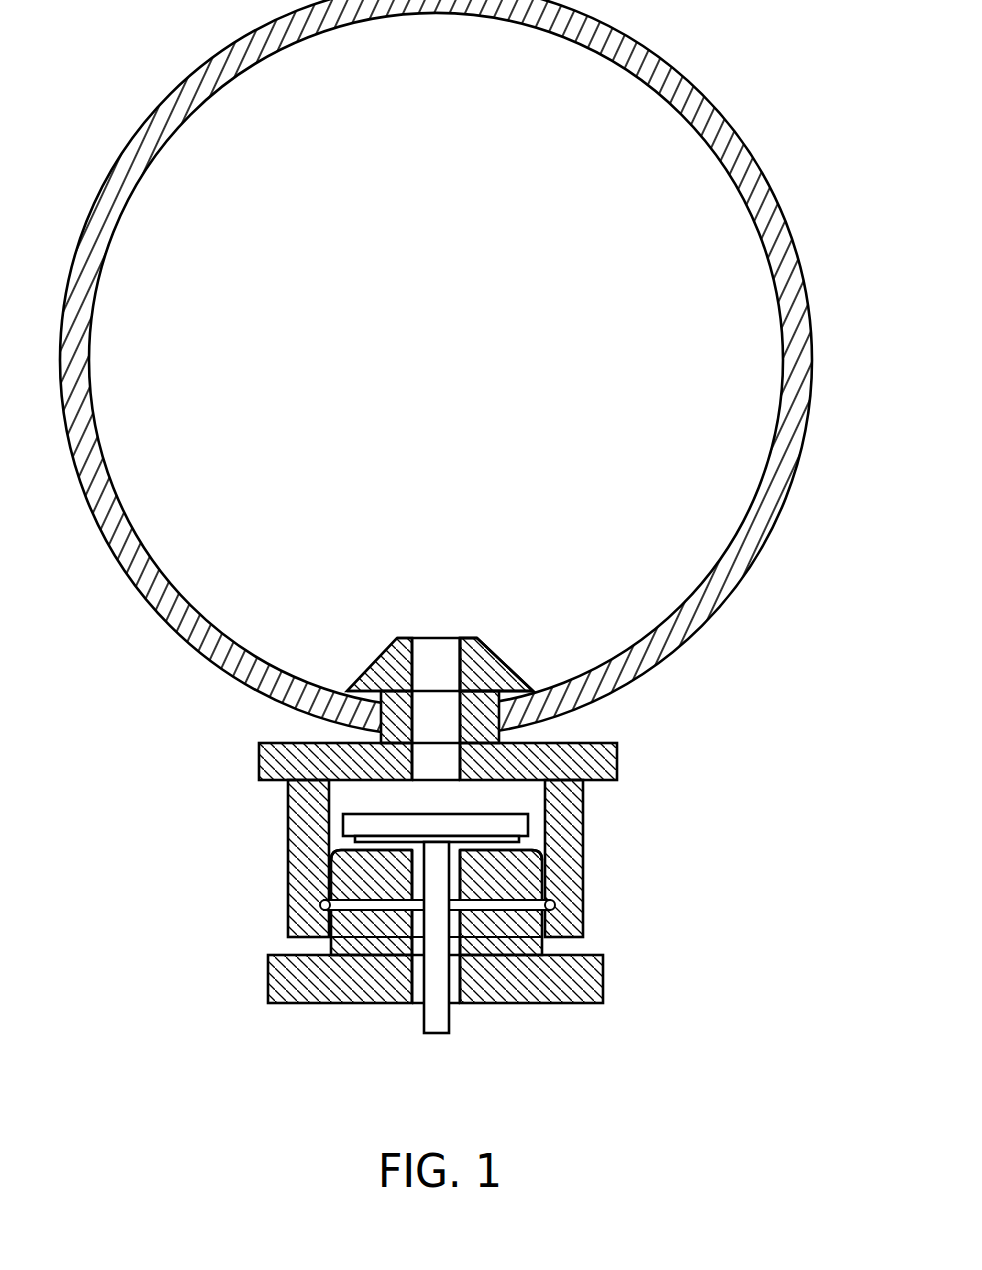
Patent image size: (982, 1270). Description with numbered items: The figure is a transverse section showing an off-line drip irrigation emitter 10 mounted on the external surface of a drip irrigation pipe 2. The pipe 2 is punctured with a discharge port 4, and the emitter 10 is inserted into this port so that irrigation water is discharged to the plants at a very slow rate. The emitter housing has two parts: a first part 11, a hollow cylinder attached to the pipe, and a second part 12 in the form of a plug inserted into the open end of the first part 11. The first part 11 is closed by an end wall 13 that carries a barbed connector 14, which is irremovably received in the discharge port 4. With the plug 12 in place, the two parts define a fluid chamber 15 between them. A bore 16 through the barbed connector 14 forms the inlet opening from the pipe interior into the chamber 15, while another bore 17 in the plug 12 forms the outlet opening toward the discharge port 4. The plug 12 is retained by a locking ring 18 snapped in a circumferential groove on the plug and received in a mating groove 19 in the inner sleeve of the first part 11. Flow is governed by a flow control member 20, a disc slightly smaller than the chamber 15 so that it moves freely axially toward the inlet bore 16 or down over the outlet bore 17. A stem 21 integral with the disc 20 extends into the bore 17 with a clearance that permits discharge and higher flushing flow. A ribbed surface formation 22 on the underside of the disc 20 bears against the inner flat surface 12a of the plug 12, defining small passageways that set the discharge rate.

The drip irrigation pipe 2 is at (702, 100).
The discharge port 4 is at (393, 677).
The drip irrigation emitter 10 is at (650, 764).
The first housing part 11 is at (307, 797).
The second housing part 12 is at (360, 920).
The inner flat surface 12a is at (377, 853).
The end wall 13 is at (307, 762).
The barbed connector 14 is at (485, 678).
The fluid chamber 15 is at (387, 798).
The bore 16 is at (432, 703).
The bore 17 is at (455, 980).
The locking ring 18 is at (512, 922).
The mating groove 19 is at (553, 905).
The flow control member 20 is at (512, 823).
The stem 21 is at (437, 1013).
The ribbed surface formation 22 is at (483, 848).